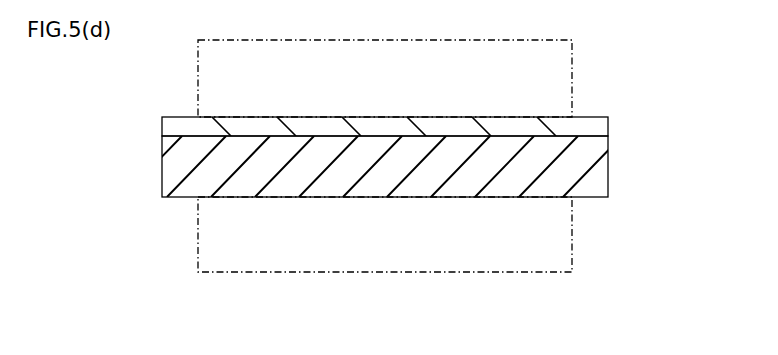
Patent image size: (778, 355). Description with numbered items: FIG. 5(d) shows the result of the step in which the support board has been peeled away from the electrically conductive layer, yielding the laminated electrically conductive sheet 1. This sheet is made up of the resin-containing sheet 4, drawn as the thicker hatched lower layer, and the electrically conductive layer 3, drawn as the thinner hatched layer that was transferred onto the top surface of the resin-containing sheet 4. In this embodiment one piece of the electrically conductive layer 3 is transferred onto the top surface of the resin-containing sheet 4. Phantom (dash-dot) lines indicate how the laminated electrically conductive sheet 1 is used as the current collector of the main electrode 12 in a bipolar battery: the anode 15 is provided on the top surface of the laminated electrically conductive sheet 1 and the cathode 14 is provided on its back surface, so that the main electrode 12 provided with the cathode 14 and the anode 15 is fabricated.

The laminated electrically conductive sheet 1 is at (426, 223).
The electrically conductive layer 3 is at (608, 137).
The resin-containing sheet 4 is at (608, 175).
The main electrode 12 is at (538, 282).
The cathode 14 is at (572, 233).
The anode 15 is at (572, 80).